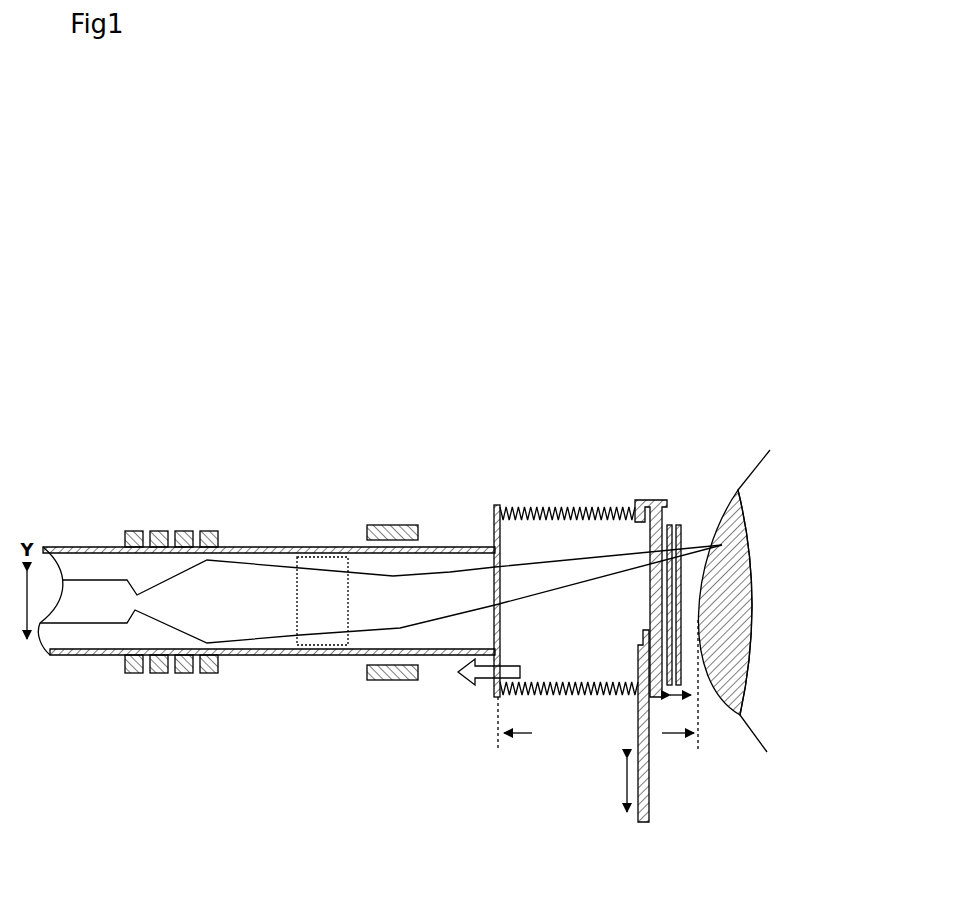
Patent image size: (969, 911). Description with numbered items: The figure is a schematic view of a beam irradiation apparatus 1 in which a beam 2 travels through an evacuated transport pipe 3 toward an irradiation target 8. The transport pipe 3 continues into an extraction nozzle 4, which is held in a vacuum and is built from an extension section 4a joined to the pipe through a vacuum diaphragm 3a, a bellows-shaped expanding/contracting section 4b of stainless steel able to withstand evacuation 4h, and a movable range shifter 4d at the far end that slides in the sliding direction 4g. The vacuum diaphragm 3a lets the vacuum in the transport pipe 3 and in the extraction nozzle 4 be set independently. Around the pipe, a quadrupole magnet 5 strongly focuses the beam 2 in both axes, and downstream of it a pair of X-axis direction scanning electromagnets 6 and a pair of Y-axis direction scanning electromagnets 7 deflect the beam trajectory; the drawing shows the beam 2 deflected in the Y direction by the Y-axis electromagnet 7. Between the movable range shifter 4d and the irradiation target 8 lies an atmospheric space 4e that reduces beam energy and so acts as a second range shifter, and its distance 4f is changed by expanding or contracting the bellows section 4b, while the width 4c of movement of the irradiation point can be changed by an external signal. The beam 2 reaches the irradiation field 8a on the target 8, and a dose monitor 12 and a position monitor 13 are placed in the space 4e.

The beam irradiation apparatus 1 is at (405, 377).
The beam 2 is at (75, 624).
The transport pipe 3 is at (275, 547).
The vacuum diaphragm 3a is at (500, 630).
The extraction nozzle 4 is at (520, 488).
The extension section 4a is at (494, 512).
The expanding/contracting section 4b is at (593, 506).
The width of movement of the irradiation point 4c is at (520, 738).
The movable range shifter 4d is at (653, 706).
The space 4e is at (699, 526).
The distance 4f is at (690, 702).
The sliding direction 4g is at (625, 826).
The evacuation 4h is at (474, 682).
The quadrupole magnet 5 is at (173, 680).
The X-axis direction scanning electromagnet 6 is at (331, 646).
The Y-axis direction scanning electromagnet 7 is at (388, 526).
The irradiation target 8 is at (759, 748).
The irradiation field 8a is at (750, 602).
The dose monitor 12 is at (665, 503).
The position monitor 13 is at (680, 524).